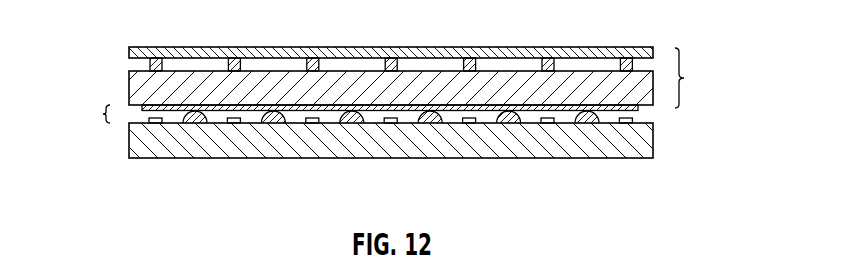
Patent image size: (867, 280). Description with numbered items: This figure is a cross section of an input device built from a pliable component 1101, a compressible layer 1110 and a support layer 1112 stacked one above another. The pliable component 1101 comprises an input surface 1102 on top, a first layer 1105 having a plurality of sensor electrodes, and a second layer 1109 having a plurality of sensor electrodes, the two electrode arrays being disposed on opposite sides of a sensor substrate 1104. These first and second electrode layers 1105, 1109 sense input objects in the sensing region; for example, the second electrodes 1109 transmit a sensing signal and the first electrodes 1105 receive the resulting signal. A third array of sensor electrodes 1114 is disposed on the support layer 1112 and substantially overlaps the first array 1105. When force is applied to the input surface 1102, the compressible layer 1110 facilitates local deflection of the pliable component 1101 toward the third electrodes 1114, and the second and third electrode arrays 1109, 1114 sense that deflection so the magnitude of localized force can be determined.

The pliable component 1101 is at (684, 78).
The input surface 1102 is at (562, 47).
The sensor substrate 1104 is at (129, 91).
The first layer having a plurality of sensor electrodes 1105 is at (149, 66).
The second layer having a plurality of sensor electrodes 1109 is at (638, 108).
The compressible layer 1110 is at (103, 114).
The support layer 1112 is at (653, 138).
The third array of sensor electrodes 1114 is at (235, 123).